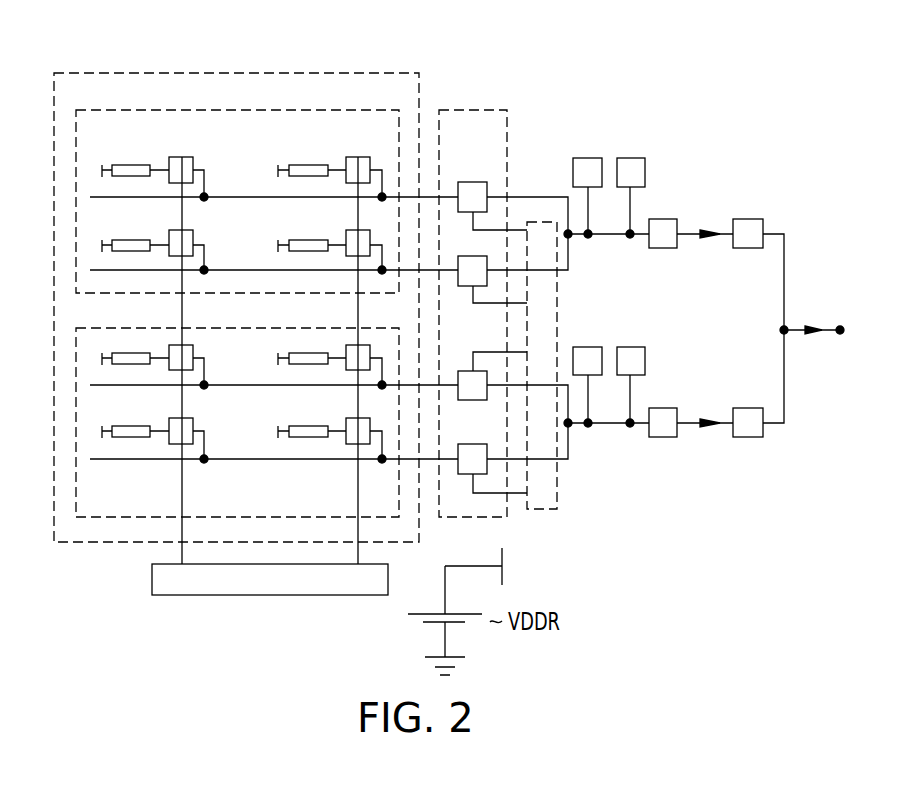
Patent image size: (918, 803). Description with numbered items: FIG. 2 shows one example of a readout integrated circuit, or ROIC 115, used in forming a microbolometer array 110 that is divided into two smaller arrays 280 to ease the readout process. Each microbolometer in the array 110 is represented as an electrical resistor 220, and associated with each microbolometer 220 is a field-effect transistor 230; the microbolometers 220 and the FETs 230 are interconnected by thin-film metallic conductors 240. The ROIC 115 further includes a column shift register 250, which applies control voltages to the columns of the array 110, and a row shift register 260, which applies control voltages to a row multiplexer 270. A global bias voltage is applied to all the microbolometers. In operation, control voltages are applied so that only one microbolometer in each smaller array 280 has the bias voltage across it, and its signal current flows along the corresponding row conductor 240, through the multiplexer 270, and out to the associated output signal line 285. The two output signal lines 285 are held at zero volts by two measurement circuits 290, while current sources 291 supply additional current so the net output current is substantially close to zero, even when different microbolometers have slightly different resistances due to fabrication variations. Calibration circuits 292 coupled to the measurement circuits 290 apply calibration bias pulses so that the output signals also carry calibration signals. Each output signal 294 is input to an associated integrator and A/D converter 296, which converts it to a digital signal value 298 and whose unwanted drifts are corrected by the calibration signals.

The microbolometer array 110 is at (370, 73).
The ROIC 115 is at (678, 84).
The microbolometer 220 is at (308, 165).
The field-effect transistor 230 is at (182, 157).
The thin-film metallic conductor 240 is at (178, 214).
The column shift register 250 is at (271, 596).
The row shift register 260 is at (557, 481).
The row multiplexer 270 is at (482, 109).
The smaller array 280 is at (350, 110).
The output signal line 285 is at (608, 236).
The measurement circuit 290 is at (662, 219).
The current source 291 is at (589, 158).
The calibration circuit 292 is at (632, 158).
The output signal 294 is at (690, 236).
The integrator and A/D converter 296 is at (749, 219).
The digital signal value 298 is at (792, 333).